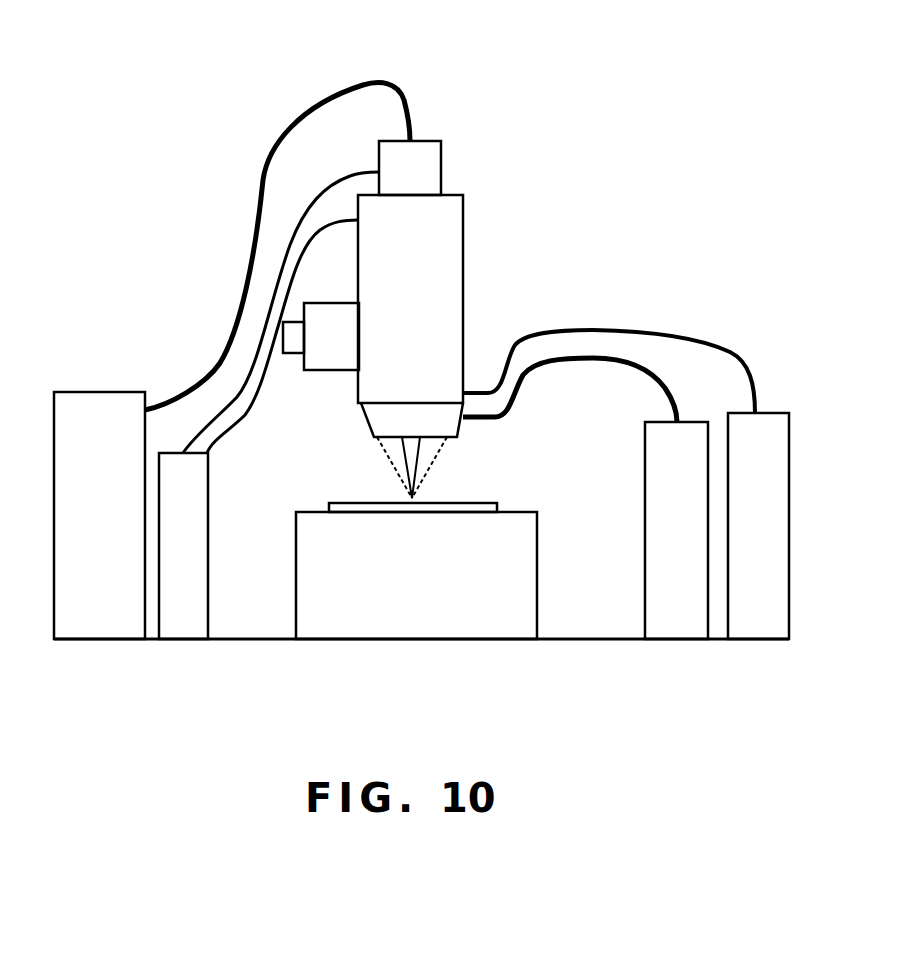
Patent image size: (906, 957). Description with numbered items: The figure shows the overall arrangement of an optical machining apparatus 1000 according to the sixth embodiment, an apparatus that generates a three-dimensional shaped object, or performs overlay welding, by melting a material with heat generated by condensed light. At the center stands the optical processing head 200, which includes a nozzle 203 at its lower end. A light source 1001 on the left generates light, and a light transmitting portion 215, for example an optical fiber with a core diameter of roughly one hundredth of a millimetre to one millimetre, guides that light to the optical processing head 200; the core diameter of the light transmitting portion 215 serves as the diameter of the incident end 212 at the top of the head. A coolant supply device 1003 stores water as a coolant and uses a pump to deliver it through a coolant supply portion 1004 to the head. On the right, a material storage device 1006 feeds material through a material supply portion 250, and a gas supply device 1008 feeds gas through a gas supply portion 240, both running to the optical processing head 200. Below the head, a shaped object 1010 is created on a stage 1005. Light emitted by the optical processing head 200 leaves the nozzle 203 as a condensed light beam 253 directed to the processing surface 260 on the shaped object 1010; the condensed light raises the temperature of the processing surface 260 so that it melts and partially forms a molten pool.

The optical machining apparatus 1000 is at (155, 156).
The light source 1001 is at (73, 398).
The coolant supply device 1003 is at (177, 627).
The coolant supply portion 1004 is at (232, 420).
The stage 1005 is at (337, 627).
The material storage device 1006 is at (683, 627).
The gas supply device 1008 is at (758, 625).
The shaped object 1010 is at (450, 507).
The optical processing head 200 is at (469, 178).
The nozzle 203 is at (372, 420).
The incident end 212 is at (413, 140).
The light transmitting portion 215 is at (270, 153).
The gas supply portion 240 is at (660, 332).
The material supply portion 250 is at (623, 367).
The laser beam 253 is at (417, 490).
The processing surface 260 is at (367, 500).